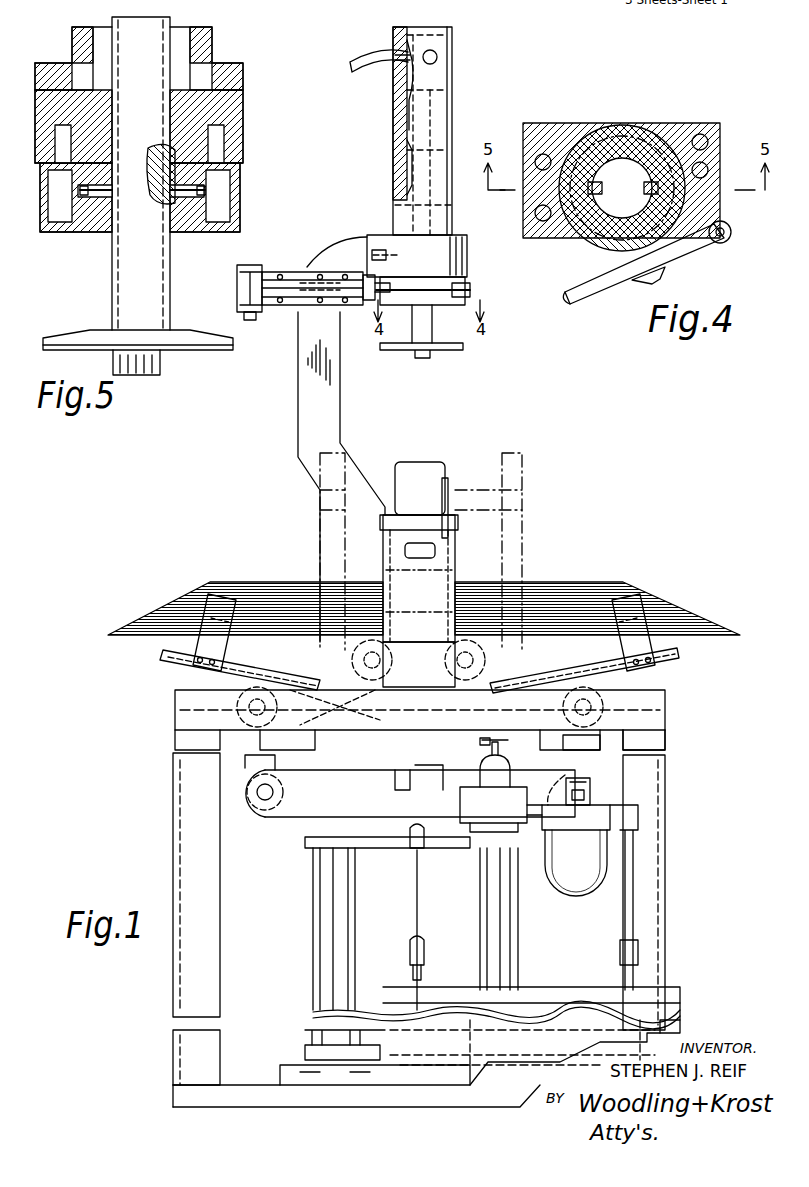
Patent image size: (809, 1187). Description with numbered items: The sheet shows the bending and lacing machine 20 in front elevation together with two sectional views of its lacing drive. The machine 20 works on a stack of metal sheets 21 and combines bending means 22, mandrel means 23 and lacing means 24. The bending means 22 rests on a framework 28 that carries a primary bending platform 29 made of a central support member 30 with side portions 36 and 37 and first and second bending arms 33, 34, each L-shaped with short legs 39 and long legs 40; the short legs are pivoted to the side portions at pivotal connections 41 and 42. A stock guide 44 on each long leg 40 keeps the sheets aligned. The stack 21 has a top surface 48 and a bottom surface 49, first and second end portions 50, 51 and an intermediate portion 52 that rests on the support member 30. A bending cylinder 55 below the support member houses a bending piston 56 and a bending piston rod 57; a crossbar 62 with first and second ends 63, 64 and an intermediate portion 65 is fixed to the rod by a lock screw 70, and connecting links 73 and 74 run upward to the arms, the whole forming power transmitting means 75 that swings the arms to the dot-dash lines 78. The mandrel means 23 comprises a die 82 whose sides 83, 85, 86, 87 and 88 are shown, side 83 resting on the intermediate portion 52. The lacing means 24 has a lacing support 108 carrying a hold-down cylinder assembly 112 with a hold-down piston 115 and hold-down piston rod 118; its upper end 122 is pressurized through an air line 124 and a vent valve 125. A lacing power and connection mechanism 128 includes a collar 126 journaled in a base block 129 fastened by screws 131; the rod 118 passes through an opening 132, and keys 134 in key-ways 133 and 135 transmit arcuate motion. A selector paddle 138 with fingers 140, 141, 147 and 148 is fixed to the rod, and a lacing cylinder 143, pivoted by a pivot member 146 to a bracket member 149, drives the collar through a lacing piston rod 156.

In FIG. 1, the bending and lacing machine 20 is at (145, 546).
In FIG. 1, the stack of metal sheets 21 is at (278, 585).
In FIG. 1, the bending means 22 is at (340, 742).
In FIG. 1, the mandrel means 23 is at (435, 578).
In FIG. 1, the lacing means 24 is at (432, 270).
In FIG. 1, the framework 28 is at (190, 712).
In FIG. 1, the primary bending platform 29 is at (419, 664).
In FIG. 1, the central support member 30 is at (412, 690).
In FIG. 1, the first bending arm 33 is at (605, 680).
In FIG. 1, the second bending arm 34 is at (230, 675).
In FIG. 1, the side portion of central support member 36 is at (488, 657).
In FIG. 1, the side portion of central support member 37 is at (350, 652).
In FIG. 1, the short legs 39 is at (278, 705).
In FIG. 1, the long legs 40 is at (190, 655).
In FIG. 1, the pivotal connection 41 is at (455, 695).
In FIG. 1, the pivotal connection 42 is at (350, 700).
In FIG. 1, the first stock guide 44 is at (212, 600).
In FIG. 1, the top surface of stack 48 is at (563, 582).
In FIG. 1, the bottom surface of stack 49 is at (610, 655).
In FIG. 1, the first end portion of stack 50 is at (588, 595).
In FIG. 1, the second end portion of stack 51 is at (250, 590).
In FIG. 1, the intermediate portion of stack 52 is at (475, 598).
In FIG. 1, the bending cylinder 55 is at (330, 920).
In FIG. 1, the bending piston 56 is at (305, 1033).
In FIG. 1, the bending piston rod 57 is at (410, 945).
In FIG. 1, the crossbar 62 is at (316, 805).
In FIG. 1, the first end of crossbar 63 is at (562, 780).
In FIG. 1, the second end of crossbar 64 is at (272, 778).
In FIG. 1, the intermediate portion of crossbar 65 is at (400, 785).
In FIG. 1, the lock screw 70 is at (428, 765).
In FIG. 1, the first connecting link 73 is at (590, 768).
In FIG. 1, the second connecting link 74 is at (250, 763).
In FIG. 1, the power transmitting means 75 is at (494, 782).
In FIG. 1, the dot-dash lines 78 is at (320, 515).
In FIG. 1, the die 82 is at (428, 462).
In FIG. 1, the side of die 83 is at (428, 580).
In FIG. 1, the side of die 85 is at (420, 468).
In FIG. 1, the side of die 86 is at (448, 480).
In FIG. 1, the side of die 87 is at (395, 478).
In FIG. 1, the side of die 88 is at (425, 462).
In FIG. 1, the lacing support 108 is at (305, 392).
In FIG. 1, the hold-down cylinder assembly 112 is at (400, 170).
In FIG. 1, the hold-down piston 115 is at (408, 125).
In FIG. 4, the hold-down piston rod 118 is at (585, 235).
In FIG. 1, the hold-down piston rod 118 is at (395, 208).
In FIG. 1, the upper end of hold-down cylinder 122 is at (398, 85).
In FIG. 1, the air line 124 is at (365, 58).
In FIG. 1, the vent valve 125 is at (436, 62).
In FIG. 5, the collar 126 is at (205, 193).
In FIG. 4, the collar 126 is at (628, 125).
In FIG. 1, the collar 126 is at (425, 300).
In FIG. 1, the lacing power and connection mechanism 128 is at (313, 298).
In FIG. 5, the base block 129 is at (172, 237).
In FIG. 4, the base block 129 is at (716, 123).
In FIG. 5, the screws 131 is at (62, 235).
In FIG. 5, the opening in collar 132 is at (168, 210).
In FIG. 4, the opening in collar 132 is at (605, 250).
In FIG. 5, the key-ways in piston rod 133 is at (118, 281).
In FIG. 5, the keys 134 is at (158, 160).
In FIG. 5, the key-ways in collar 135 is at (175, 216).
In FIG. 1, the first selector paddle 138 is at (450, 350).
In FIG. 4, the first finger 140 is at (635, 125).
In FIG. 4, the second finger 141 is at (556, 140).
In FIG. 1, the lacing cylinder 143 is at (300, 270).
In FIG. 1, the pivot member 146 is at (252, 322).
In FIG. 4, the third finger 147 is at (733, 230).
In FIG. 4, the fourth finger 148 is at (670, 272).
In FIG. 1, the bracket member 149 is at (310, 270).
In FIG. 4, the lacing piston rod 156 is at (592, 298).
In FIG. 1, the lacing piston rod 156 is at (420, 295).